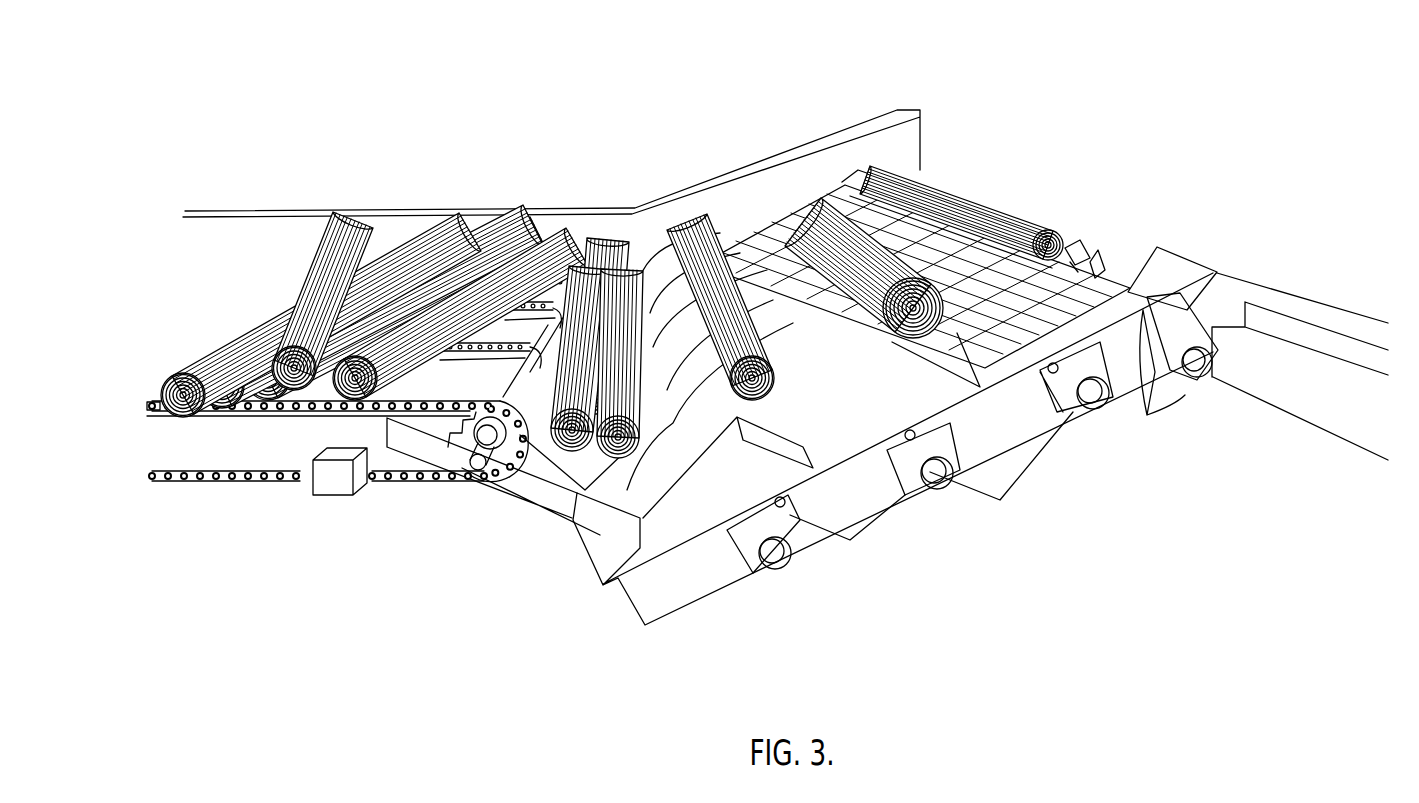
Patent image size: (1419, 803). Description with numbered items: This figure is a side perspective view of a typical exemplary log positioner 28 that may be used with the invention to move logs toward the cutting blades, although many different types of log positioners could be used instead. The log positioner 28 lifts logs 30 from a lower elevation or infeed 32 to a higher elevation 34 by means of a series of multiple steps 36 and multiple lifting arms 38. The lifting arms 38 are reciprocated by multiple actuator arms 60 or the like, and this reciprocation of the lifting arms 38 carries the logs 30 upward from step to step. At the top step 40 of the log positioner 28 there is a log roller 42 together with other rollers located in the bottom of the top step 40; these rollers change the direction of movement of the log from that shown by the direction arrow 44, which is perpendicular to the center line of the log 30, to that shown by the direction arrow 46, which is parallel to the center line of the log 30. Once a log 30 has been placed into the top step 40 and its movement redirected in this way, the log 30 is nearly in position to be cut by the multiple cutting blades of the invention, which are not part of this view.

The log positioner 28 is at (1005, 132).
The logs 30 is at (326, 232).
The lower elevation 32 is at (143, 375).
The higher elevation 34 is at (1040, 183).
The steps 36 is at (600, 477).
The log positioner lifting arms 38 is at (653, 483).
The top step 40 is at (1147, 410).
The log roller 42 is at (1097, 287).
The direction arrow 44 is at (210, 272).
The direction arrow 46 is at (990, 180).
The log positioner actuator arms 60 is at (775, 572).